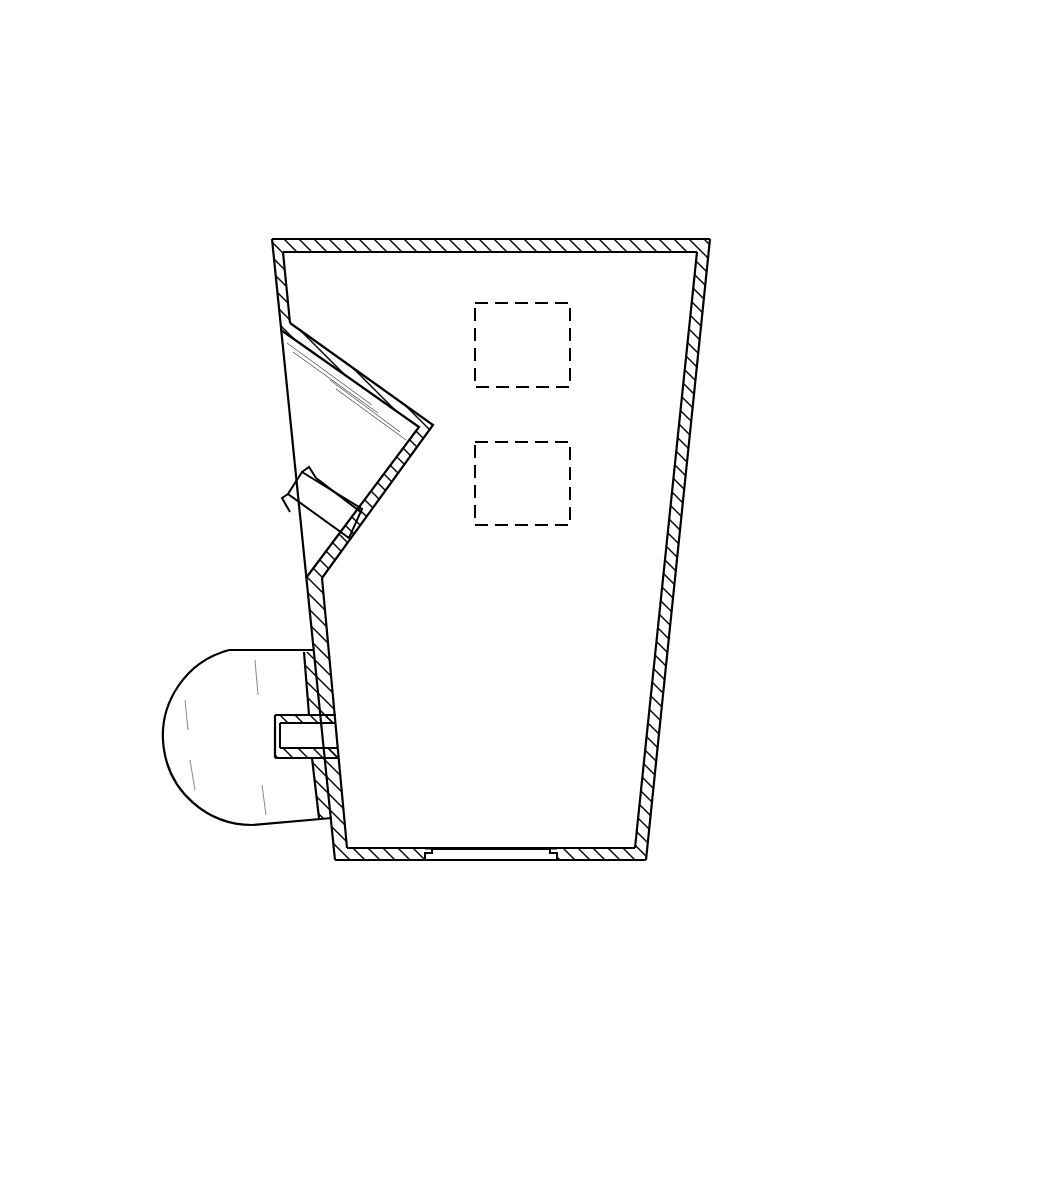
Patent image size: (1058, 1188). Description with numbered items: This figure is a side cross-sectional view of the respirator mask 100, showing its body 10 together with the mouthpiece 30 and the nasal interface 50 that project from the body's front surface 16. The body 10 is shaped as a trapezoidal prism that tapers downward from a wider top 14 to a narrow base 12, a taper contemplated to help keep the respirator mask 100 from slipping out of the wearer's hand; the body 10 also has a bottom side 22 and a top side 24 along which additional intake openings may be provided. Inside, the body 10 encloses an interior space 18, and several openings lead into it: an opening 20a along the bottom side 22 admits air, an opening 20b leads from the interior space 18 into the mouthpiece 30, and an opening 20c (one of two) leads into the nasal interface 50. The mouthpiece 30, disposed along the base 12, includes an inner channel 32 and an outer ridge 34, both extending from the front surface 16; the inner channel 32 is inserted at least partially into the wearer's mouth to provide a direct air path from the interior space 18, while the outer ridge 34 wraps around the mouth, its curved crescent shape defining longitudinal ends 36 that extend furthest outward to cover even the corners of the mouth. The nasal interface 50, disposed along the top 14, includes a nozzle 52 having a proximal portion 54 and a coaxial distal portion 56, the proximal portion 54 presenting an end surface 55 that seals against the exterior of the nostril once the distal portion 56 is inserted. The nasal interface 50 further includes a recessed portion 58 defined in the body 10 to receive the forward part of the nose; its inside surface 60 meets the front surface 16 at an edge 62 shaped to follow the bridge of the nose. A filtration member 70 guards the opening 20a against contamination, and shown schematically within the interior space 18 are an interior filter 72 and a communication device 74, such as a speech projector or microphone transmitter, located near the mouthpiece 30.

The respirator mask 100 is at (630, 131).
The body 10 is at (673, 560).
The base 12 is at (678, 832).
The top 14 is at (738, 275).
The front surface 16 is at (276, 283).
The interior space 18 is at (338, 288).
The opening 20a is at (520, 832).
The opening 20b is at (358, 716).
The opening 20c is at (375, 548).
The bottom side 22 is at (598, 862).
The top side 24 is at (437, 238).
The mouthpiece 30 is at (272, 852).
The inner channel 32 is at (292, 712).
The outer ridge 34 is at (268, 650).
The longitudinal ends 36 is at (163, 740).
The nasal interface 50 is at (255, 342).
The nozzle 52 is at (312, 528).
The proximal portion 54 is at (347, 490).
The end surface 55 is at (284, 506).
The distal portion 56 is at (290, 492).
The recessed portion 58 is at (262, 438).
The inside surface 60 is at (300, 393).
The edge 62 is at (290, 414).
The filtration member 70 is at (465, 862).
The interior filter 72 is at (522, 345).
The communication device 74 is at (522, 483).